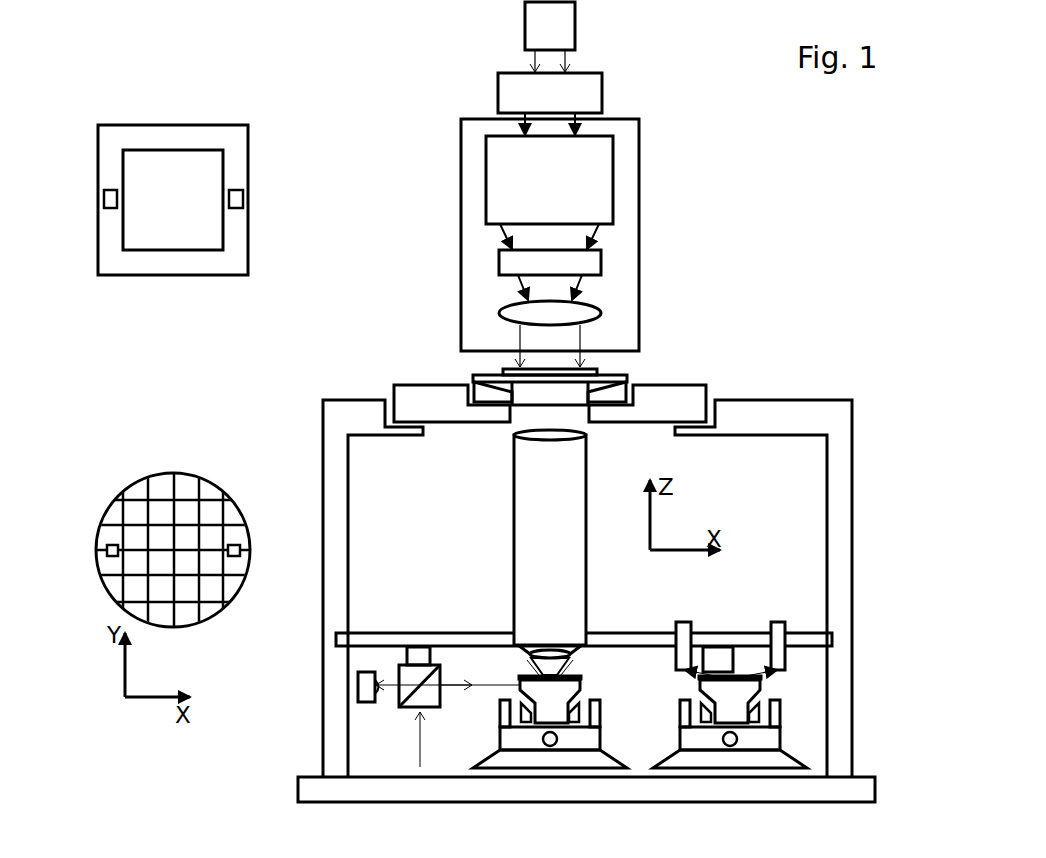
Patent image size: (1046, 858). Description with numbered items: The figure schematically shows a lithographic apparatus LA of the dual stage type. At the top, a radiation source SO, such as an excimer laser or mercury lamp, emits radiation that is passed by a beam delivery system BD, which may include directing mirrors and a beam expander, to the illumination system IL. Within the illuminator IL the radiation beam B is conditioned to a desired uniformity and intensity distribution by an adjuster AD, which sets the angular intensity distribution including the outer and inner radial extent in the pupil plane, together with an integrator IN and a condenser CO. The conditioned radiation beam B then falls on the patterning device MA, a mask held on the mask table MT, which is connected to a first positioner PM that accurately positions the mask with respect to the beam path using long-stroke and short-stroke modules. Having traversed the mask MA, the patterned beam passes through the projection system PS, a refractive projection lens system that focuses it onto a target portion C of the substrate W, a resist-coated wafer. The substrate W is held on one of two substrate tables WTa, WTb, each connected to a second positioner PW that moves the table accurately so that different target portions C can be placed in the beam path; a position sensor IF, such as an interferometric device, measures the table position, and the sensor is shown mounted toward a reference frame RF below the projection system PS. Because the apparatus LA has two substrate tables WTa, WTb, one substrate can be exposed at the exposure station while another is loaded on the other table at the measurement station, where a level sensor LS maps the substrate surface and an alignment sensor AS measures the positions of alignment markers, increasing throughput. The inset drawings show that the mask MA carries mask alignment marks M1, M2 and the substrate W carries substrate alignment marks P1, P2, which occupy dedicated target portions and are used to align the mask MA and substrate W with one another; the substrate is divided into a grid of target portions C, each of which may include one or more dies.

The radiation source SO is at (576, 28).
The beam delivery system BD is at (602, 98).
The illumination system IL is at (640, 158).
The adjuster AD is at (614, 201).
The integrator IN is at (602, 260).
The condenser CO is at (592, 313).
The radiation beam B is at (550, 363).
The patterning device MA is at (262, 226).
The mask alignment mark M1 is at (235, 190).
The mask alignment mark M2 is at (107, 190).
The mask table MT is at (696, 385).
The first positioner PM is at (393, 390).
The projection system PS is at (587, 525).
The substrate W is at (260, 540).
The target portion C is at (173, 551).
The substrate alignment mark P1 is at (112, 545).
The substrate alignment mark P2 is at (234, 545).
The substrate table WTa is at (581, 688).
The substrate table WTb is at (762, 688).
The second positioner PW is at (500, 748).
The position sensor IF is at (392, 712).
The reference frame RF is at (642, 633).
The alignment sensor AS is at (714, 653).
The level sensor LS is at (786, 626).
The lithographic apparatus LA is at (750, 208).